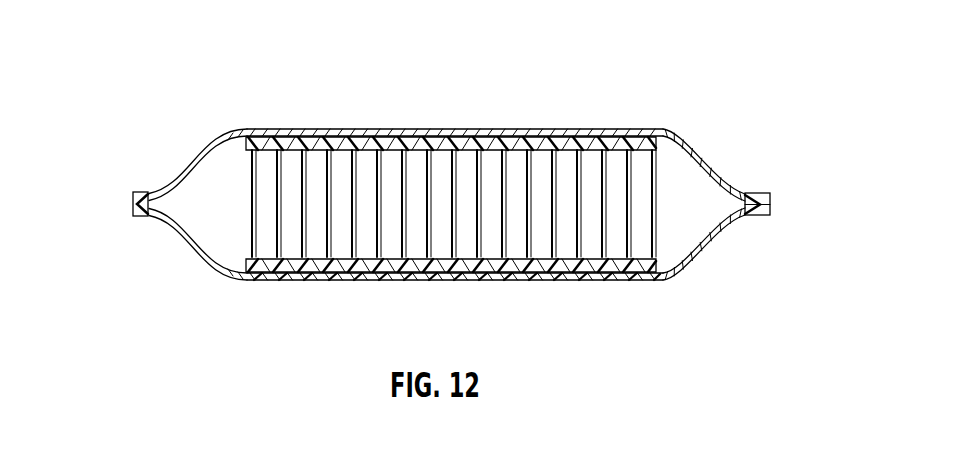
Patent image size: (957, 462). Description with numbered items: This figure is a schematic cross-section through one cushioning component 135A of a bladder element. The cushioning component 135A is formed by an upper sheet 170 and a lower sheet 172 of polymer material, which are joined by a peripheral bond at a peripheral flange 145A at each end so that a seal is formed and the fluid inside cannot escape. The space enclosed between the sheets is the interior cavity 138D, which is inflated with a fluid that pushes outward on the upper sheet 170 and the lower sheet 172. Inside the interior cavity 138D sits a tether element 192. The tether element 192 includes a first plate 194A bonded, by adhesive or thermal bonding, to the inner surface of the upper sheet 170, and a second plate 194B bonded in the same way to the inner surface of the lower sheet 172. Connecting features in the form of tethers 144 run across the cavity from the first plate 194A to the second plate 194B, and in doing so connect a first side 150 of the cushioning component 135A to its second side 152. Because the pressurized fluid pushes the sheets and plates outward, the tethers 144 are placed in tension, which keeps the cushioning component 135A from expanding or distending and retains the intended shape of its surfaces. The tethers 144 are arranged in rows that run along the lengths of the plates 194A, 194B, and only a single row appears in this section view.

The first side 150 is at (497, 131).
The second side 152 is at (385, 281).
The upper sheet 170 is at (383, 131).
The lower sheet 172 is at (373, 276).
The first plate 194A is at (289, 146).
The second plate 194B is at (306, 262).
The tethers 144 is at (277, 236).
The tether element 192 is at (241, 152).
The peripheral flange 145A is at (133, 203).
The cushioning component 135A is at (697, 153).
The interior cavity 138D is at (677, 204).